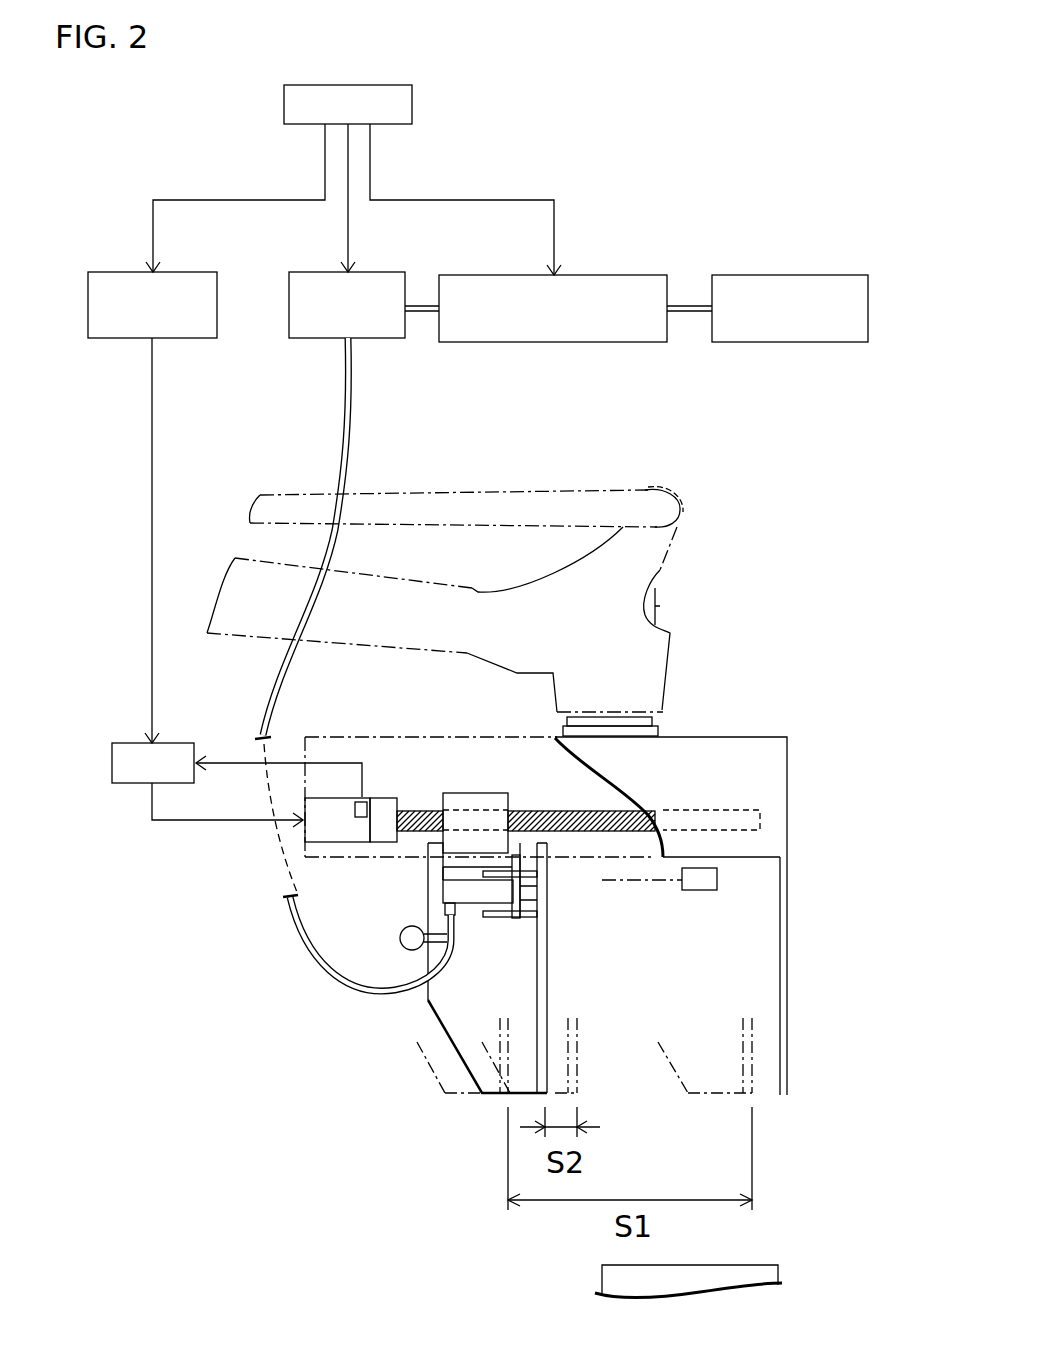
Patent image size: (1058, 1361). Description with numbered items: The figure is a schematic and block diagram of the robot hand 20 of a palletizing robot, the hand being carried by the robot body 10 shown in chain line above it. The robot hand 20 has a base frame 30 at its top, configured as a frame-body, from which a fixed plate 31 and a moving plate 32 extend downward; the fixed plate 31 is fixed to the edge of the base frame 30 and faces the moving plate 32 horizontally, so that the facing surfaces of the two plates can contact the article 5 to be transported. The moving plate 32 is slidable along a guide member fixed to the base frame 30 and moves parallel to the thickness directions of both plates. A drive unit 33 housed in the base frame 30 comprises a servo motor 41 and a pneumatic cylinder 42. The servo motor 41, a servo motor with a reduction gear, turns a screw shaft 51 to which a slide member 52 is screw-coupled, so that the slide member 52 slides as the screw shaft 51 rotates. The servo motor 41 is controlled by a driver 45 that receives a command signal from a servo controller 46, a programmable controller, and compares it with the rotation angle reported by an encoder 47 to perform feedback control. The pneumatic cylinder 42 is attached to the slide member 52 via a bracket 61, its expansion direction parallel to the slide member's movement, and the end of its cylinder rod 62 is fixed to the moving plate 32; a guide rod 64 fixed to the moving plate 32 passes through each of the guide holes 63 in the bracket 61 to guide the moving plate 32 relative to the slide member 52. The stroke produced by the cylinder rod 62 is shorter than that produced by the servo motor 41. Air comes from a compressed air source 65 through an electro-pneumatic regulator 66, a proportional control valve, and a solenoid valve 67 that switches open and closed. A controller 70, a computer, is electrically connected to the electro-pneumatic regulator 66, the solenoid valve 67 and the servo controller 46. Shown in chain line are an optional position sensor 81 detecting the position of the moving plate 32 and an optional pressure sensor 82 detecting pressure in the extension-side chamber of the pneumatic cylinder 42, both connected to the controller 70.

The article 5 is at (780, 1277).
The robot body 10 is at (267, 462).
The robot hand 20 is at (555, 898).
The base frame 30 is at (753, 763).
The fixed plate 31 is at (790, 1058).
The moving plate 32 is at (537, 1048).
The drive unit 33 is at (588, 199).
The servo motor 41 is at (338, 833).
The pneumatic cylinder 42 is at (438, 897).
The driver 45 is at (130, 743).
The servo controller 46 is at (115, 272).
The encoder 47 is at (373, 807).
The screw shaft 51 is at (540, 811).
The slide member 52 is at (480, 793).
The bracket 61 is at (440, 867).
The cylinder rod 62 is at (533, 880).
The guide holes 63 is at (507, 917).
The guide rod 64 is at (528, 918).
The compressed air source 65 is at (790, 276).
The electro-pneumatic regulator 66 is at (600, 276).
The solenoid valve 67 is at (375, 272).
The controller 70 is at (412, 107).
The position sensor 81 is at (700, 893).
The pressure sensor 82 is at (410, 950).